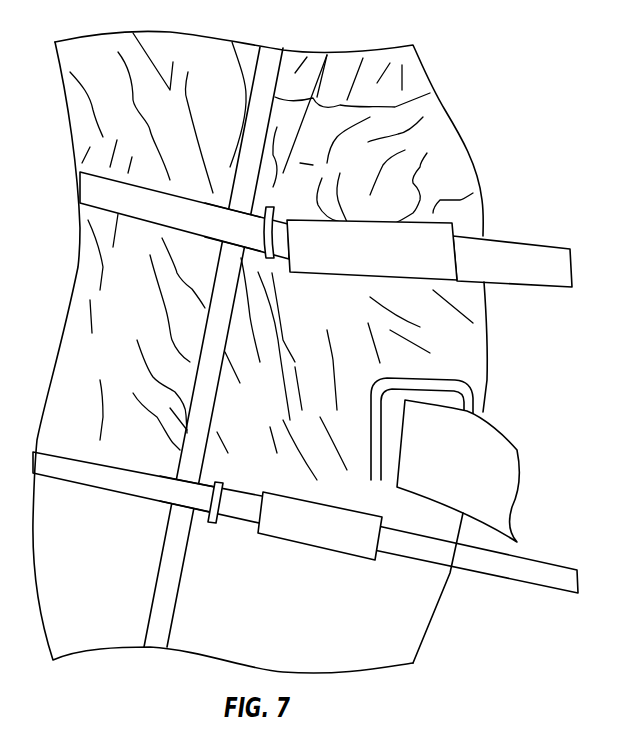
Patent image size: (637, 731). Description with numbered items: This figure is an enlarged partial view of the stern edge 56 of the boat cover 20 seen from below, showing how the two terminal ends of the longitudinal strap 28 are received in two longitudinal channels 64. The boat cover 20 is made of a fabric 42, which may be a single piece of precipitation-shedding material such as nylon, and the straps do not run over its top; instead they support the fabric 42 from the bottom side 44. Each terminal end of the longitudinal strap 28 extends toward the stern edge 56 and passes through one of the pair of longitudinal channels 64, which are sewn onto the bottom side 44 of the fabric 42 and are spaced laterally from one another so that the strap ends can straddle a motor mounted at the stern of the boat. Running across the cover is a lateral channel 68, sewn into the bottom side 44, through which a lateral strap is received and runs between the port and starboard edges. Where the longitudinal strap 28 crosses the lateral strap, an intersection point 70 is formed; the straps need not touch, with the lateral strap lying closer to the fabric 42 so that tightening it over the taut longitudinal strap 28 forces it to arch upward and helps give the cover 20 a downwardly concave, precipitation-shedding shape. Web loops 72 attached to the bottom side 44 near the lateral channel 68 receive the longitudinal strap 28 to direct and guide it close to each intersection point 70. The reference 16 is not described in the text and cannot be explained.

The strap assembly 16 is at (445, 520).
The boat cover 20 is at (489, 53).
The longitudinal strap 28 is at (157, 208).
The fabric 42 is at (497, 123).
The bottom side 44 is at (204, 118).
The stern edge 56 is at (488, 343).
The longitudinal channel 64 is at (362, 265).
The lateral channel 68 is at (160, 602).
The intersection point 70 is at (237, 228).
The web loop 72 is at (274, 260).